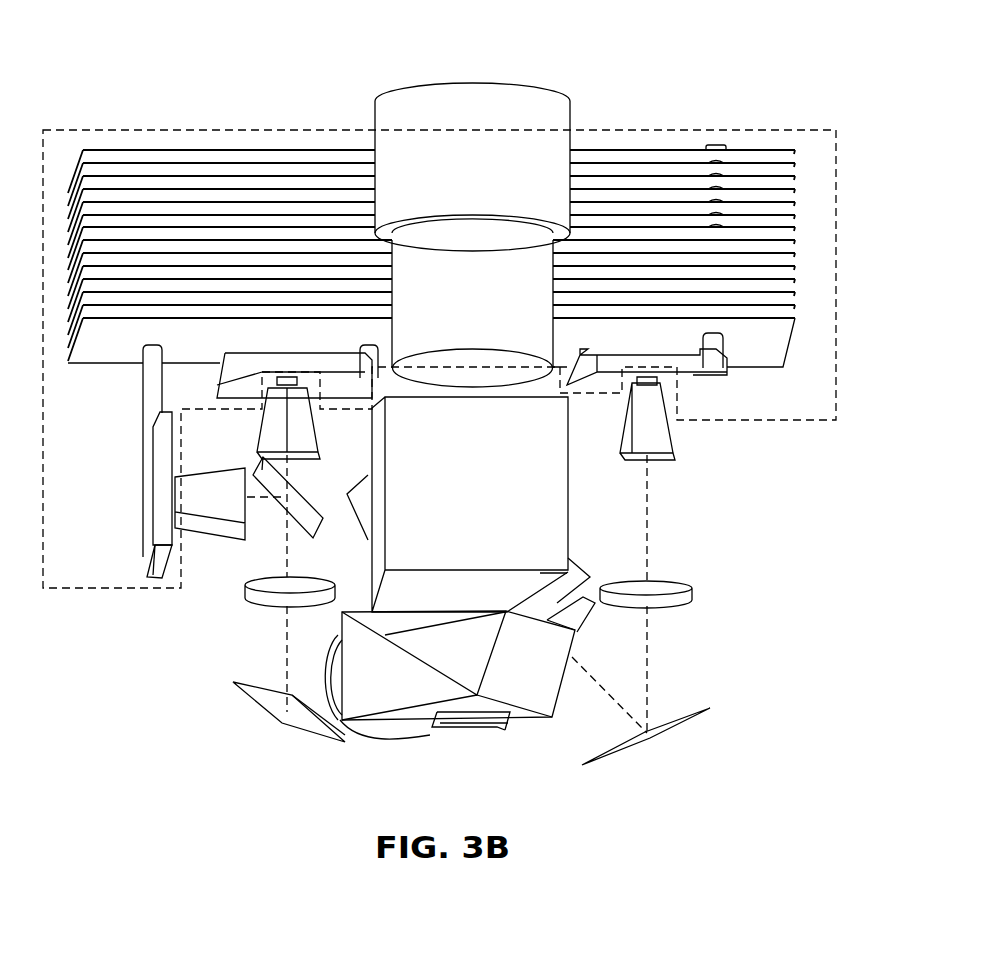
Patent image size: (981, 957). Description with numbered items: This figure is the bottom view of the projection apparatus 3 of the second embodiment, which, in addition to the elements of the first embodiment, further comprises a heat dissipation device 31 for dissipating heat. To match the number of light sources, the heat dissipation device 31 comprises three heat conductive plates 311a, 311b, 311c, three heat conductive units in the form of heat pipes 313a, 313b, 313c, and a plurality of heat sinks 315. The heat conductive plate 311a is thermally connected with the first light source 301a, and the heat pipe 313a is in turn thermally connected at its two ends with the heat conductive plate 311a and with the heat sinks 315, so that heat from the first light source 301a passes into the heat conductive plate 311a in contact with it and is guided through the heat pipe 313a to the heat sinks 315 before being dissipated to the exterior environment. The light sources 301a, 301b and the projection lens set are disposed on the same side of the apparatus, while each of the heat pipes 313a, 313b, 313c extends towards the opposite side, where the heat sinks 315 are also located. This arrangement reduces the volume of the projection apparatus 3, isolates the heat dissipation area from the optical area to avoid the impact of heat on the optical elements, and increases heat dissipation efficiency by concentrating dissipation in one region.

The projection apparatus 3 is at (662, 68).
The heat dissipation device 31 is at (237, 130).
The heat sinks 315 is at (105, 347).
The heat pipe 313b is at (380, 357).
The heat conductive plate 311b is at (307, 360).
The light source 301b is at (305, 383).
The heat pipe 313c is at (148, 472).
The heat conductive plate 311c is at (155, 572).
The heat pipe 313a is at (718, 347).
The heat conductive plate 311a is at (695, 370).
The first light source 301a is at (650, 382).